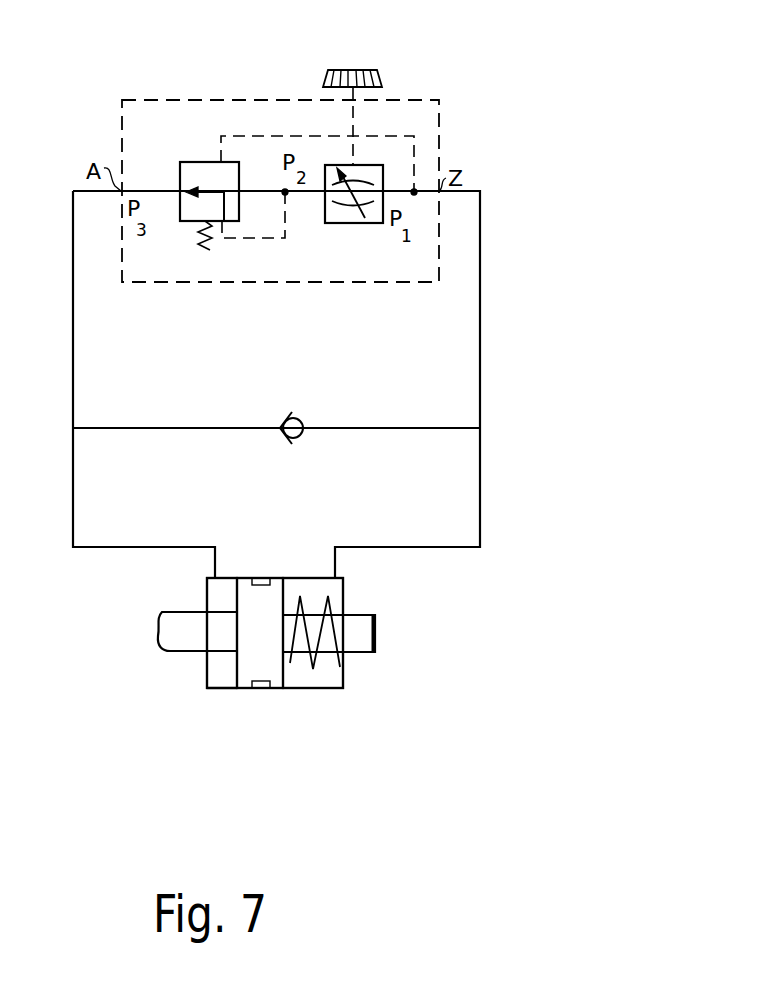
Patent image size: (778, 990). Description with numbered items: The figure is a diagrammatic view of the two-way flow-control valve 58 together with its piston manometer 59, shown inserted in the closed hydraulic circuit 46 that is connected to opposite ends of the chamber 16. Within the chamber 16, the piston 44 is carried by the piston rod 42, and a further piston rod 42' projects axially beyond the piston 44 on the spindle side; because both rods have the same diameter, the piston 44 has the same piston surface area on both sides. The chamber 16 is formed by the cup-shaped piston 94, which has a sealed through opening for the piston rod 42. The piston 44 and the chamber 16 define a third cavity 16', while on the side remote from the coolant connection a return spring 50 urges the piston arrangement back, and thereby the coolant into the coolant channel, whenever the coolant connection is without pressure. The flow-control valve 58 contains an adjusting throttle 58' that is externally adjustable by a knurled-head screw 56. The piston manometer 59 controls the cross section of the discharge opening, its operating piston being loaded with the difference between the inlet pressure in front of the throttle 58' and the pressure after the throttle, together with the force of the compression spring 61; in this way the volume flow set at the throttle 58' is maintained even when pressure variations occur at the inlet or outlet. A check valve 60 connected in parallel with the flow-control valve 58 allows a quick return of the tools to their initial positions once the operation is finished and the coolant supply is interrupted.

The chamber 16 is at (275, 686).
The third cavity 16' is at (152, 631).
The piston rod 42 is at (188, 668).
The further piston rod 42' is at (344, 686).
The piston 44 is at (256, 665).
The closed hydraulic circuit 46 is at (480, 487).
The return spring 50 is at (346, 596).
The knurled-head screw 56 is at (378, 72).
The two-way flow-control valve 58 is at (234, 174).
The adjusting throttle 58' is at (319, 206).
The piston manometer 59 is at (200, 177).
The check valve 60 is at (301, 421).
The compression spring 61 is at (208, 251).
The cup-shaped piston 94 is at (217, 690).